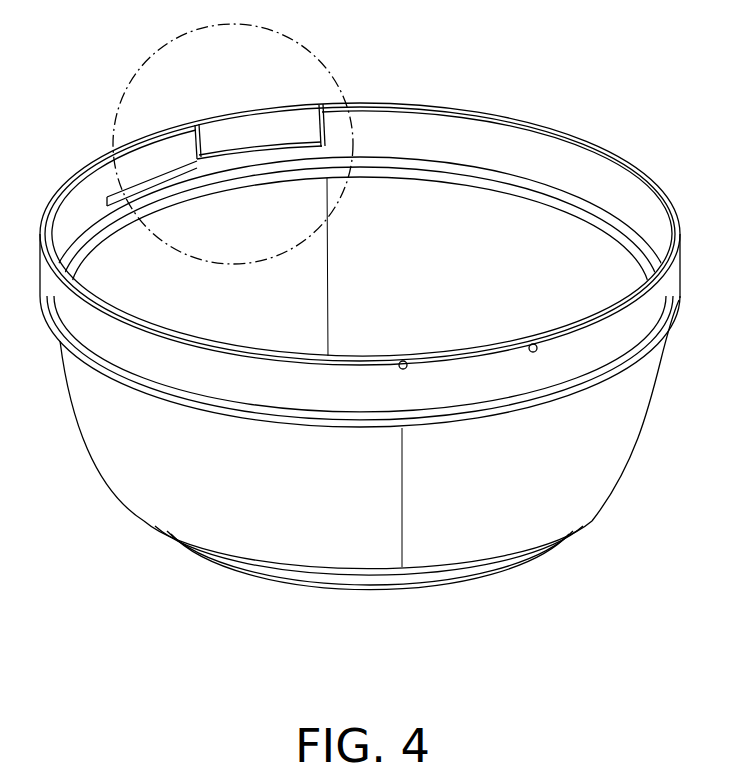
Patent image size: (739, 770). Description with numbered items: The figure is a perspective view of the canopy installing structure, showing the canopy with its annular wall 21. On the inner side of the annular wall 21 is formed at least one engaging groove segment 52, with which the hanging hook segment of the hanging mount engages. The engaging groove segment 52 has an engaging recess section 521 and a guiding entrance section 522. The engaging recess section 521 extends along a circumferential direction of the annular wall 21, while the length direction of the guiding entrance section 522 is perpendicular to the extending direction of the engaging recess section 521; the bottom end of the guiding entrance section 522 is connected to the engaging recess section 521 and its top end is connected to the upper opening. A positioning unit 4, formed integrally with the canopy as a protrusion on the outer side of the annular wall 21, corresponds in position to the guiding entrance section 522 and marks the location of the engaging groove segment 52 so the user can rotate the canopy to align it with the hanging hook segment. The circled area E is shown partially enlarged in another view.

The annular wall 21 is at (555, 497).
The engaging groove segment 52 is at (599, 303).
The engaging recess section 521 is at (160, 172).
The guiding entrance section 522 is at (263, 127).
The positioning unit 4 is at (406, 368).
The area E is at (132, 83).